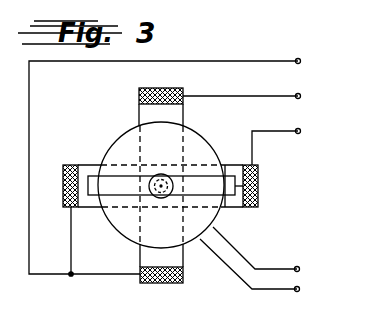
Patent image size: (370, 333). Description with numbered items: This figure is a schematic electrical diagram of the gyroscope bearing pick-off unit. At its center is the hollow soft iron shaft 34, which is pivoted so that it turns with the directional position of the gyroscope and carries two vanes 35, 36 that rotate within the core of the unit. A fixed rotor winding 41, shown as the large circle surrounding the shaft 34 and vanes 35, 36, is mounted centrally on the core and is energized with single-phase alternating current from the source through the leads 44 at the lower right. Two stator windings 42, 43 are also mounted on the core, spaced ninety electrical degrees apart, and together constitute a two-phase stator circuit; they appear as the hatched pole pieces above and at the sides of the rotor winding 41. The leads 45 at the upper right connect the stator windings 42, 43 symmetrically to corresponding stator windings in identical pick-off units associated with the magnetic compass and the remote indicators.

The hollow soft iron shaft 34 is at (166, 198).
The vane 35 is at (93, 179).
The vane 36 is at (258, 188).
The rotor winding 41 is at (207, 142).
The stator winding 42 is at (184, 89).
The stator winding 43 is at (70, 165).
The leads 44 is at (303, 262).
The leads 45 is at (306, 50).